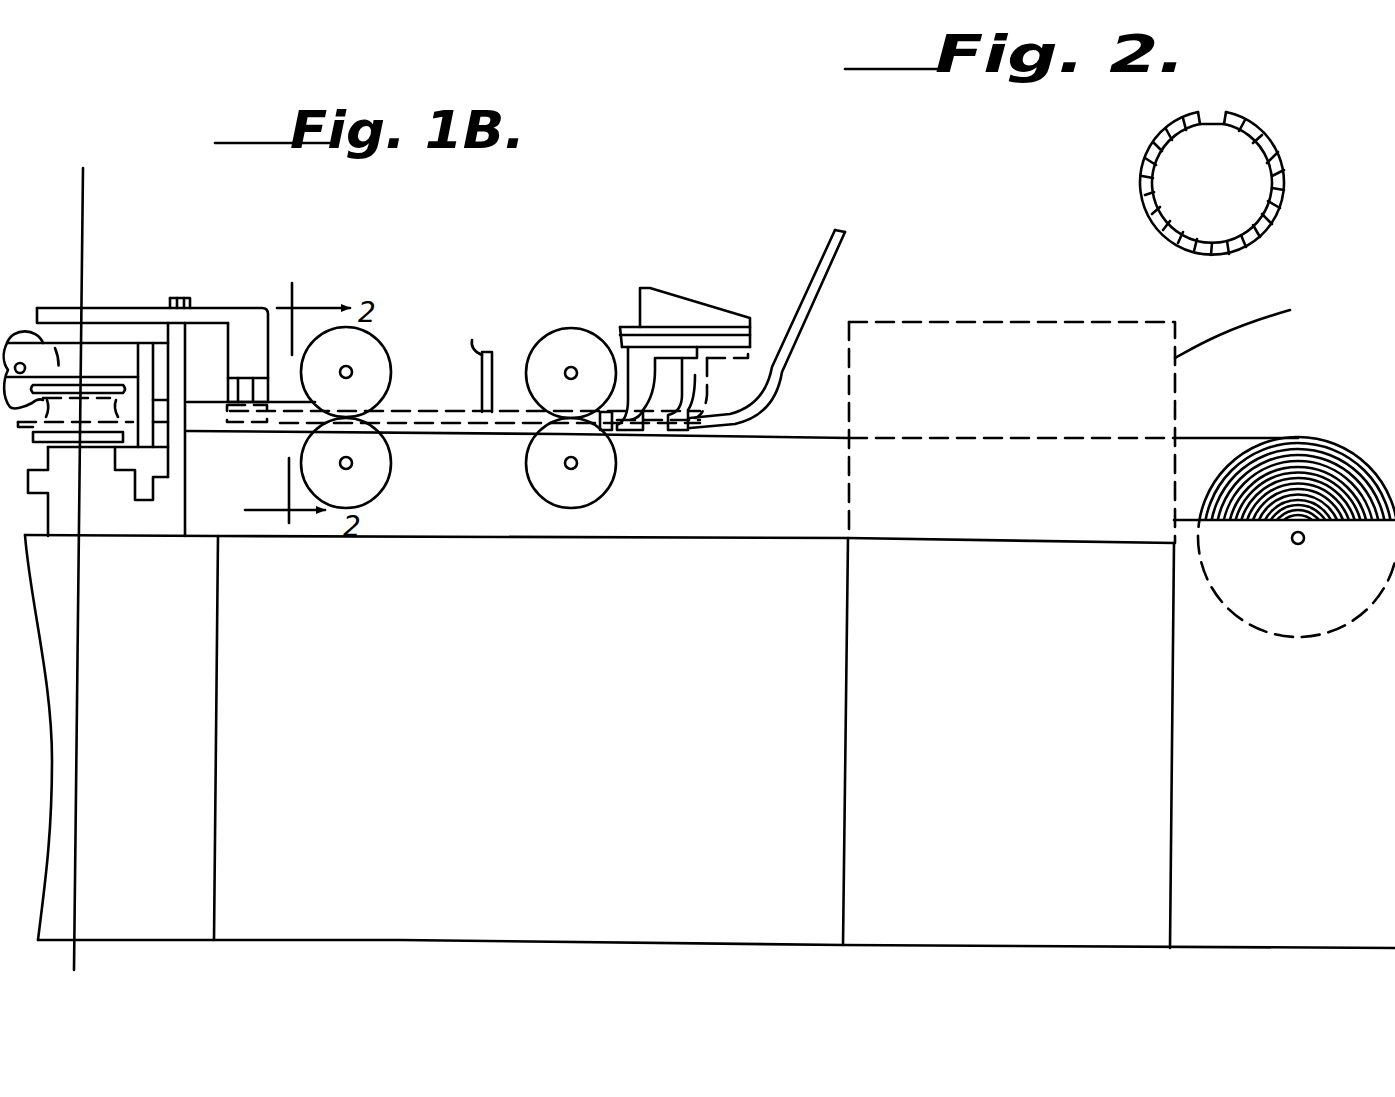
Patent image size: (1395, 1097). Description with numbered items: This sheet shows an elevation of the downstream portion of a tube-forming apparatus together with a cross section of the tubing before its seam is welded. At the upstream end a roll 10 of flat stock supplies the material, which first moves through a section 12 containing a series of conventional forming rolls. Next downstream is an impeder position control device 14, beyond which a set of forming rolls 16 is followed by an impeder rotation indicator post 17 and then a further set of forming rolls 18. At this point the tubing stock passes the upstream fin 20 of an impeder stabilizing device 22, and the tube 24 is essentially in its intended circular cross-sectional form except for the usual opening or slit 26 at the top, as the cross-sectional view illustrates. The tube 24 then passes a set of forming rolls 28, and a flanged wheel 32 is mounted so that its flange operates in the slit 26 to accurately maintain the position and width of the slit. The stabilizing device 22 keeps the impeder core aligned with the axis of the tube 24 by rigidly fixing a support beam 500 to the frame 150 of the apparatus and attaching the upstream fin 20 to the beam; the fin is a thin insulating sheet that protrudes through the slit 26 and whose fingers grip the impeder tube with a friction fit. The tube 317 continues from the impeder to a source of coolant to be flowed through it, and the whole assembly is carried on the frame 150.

In FIG. 1B, the roll of flat stock 10 is at (1380, 427).
In FIG. 1B, the forming rolls section 12 is at (900, 322).
In FIG. 1B, the impeder position control device 14 is at (700, 281).
In FIG. 1B, the set of forming rolls 16 is at (573, 333).
In FIG. 1B, the impeder rotation indicator post 17 is at (495, 359).
In FIG. 1B, the set of forming rolls 18 is at (385, 338).
In FIG. 1B, the upstream fin 20 is at (250, 338).
In FIG. 1B, the impeder stabilizing device 22 is at (220, 292).
In FIG. 1B, the tube 24 is at (241, 432).
In FIG. 2, the tube 24 is at (1287, 168).
In FIG. 2, the slit 26 is at (1207, 118).
In FIG. 1B, the set of forming rolls 28 is at (100, 448).
In FIG. 1B, the flanged wheel 32 is at (42, 338).
In FIG. 1B, the frame 150 is at (800, 540).
In FIG. 1B, the tube 317 is at (840, 250).
In FIG. 1B, the support beam 500 is at (130, 317).